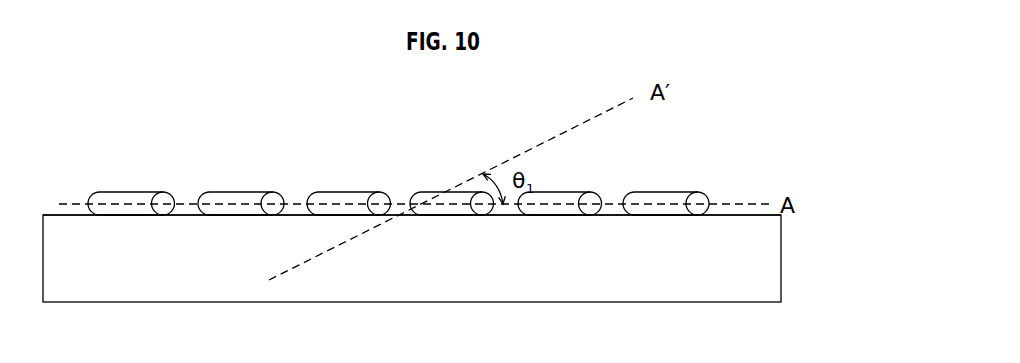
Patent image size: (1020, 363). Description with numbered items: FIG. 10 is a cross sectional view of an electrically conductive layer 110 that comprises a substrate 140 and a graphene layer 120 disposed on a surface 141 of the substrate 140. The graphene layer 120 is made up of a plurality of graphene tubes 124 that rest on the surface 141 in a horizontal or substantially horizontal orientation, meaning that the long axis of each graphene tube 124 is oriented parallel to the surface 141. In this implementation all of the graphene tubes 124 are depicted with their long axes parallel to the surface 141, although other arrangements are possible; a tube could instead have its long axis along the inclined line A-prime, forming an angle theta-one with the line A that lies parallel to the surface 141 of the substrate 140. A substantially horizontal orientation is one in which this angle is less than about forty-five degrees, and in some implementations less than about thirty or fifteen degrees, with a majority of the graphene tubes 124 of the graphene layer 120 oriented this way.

The electrically conductive layer 110 is at (113, 82).
The graphene layer 120 is at (800, 187).
The graphene tubes 124 is at (338, 175).
The substrate 140 is at (788, 265).
The surface 141 is at (730, 215).